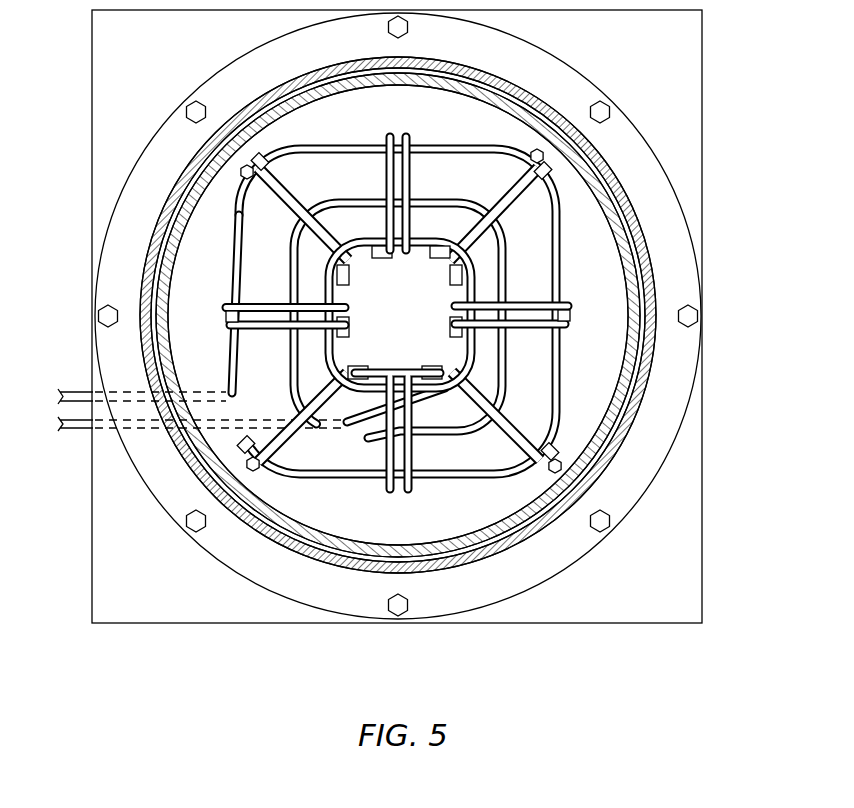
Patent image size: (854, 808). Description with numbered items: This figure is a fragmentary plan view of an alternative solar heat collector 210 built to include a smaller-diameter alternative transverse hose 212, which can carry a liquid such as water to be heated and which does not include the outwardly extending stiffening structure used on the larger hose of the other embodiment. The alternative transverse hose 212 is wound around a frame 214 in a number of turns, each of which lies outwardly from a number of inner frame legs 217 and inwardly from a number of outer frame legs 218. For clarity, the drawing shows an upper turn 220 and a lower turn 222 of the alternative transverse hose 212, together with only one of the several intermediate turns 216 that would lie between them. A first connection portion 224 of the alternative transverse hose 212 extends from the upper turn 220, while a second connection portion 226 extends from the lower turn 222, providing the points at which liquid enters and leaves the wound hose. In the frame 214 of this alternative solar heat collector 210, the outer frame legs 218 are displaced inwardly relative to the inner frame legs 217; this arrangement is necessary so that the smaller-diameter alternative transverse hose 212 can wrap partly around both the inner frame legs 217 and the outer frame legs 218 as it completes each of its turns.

The alternative solar heat collector 210 is at (233, 650).
The alternative transverse hose 212 is at (318, 488).
The frame 214 is at (584, 334).
The intermediate turns 216 is at (515, 272).
The inner frame legs 217 is at (530, 477).
The outer frame legs 218 is at (413, 494).
The upper turn 220 is at (430, 373).
The lower turn 222 is at (226, 270).
The first connection portion 224 is at (72, 430).
The second connection portion 226 is at (75, 392).